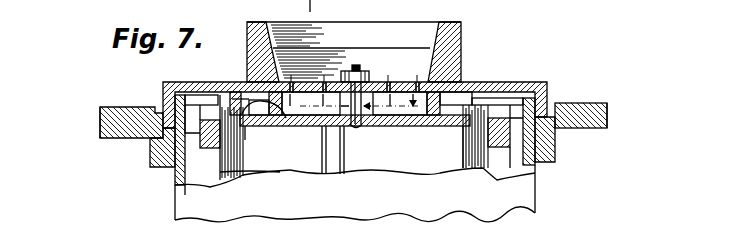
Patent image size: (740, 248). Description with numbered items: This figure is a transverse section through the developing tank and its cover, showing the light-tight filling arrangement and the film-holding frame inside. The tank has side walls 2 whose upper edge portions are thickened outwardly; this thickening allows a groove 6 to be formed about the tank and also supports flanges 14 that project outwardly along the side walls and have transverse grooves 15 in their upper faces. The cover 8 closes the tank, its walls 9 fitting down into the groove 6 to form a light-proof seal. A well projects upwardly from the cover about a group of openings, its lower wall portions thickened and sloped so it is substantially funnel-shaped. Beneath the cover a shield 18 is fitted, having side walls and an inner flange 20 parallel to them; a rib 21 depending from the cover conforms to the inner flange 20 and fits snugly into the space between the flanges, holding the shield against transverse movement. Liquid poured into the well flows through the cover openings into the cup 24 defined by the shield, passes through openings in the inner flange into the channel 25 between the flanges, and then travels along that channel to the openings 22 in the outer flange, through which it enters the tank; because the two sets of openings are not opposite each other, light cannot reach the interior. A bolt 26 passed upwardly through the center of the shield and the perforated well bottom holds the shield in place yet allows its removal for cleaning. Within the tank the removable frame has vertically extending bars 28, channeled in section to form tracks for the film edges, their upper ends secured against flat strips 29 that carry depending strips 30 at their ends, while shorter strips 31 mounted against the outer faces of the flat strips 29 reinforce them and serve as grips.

The side walls 2 is at (175, 185).
The groove 6 is at (150, 152).
The cover 8 is at (212, 104).
The walls 9 is at (163, 105).
The flanges 14 is at (100, 128).
The grooves 15 is at (114, 104).
The shield 18 is at (390, 126).
The inner flange 20 is at (280, 126).
The rib 21 is at (461, 80).
The openings 22 is at (247, 110).
The cup 24 is at (305, 126).
The channel 25 is at (260, 126).
The bolt 26 is at (362, 70).
The vertically extending bars 28 is at (243, 178).
The flat strips 29 is at (193, 110).
The depending strips 30 is at (214, 210).
The strips 31 is at (202, 152).